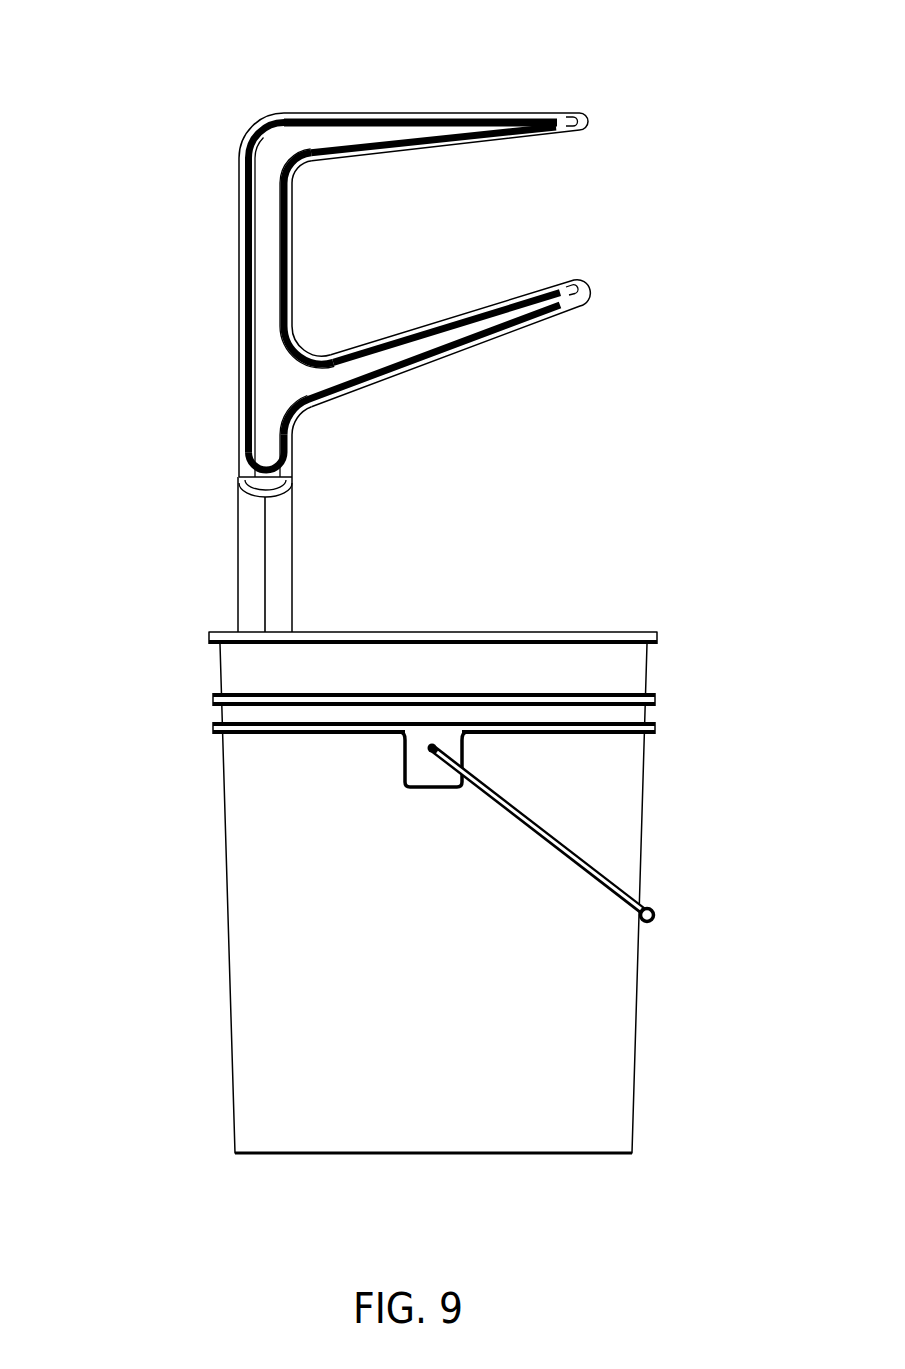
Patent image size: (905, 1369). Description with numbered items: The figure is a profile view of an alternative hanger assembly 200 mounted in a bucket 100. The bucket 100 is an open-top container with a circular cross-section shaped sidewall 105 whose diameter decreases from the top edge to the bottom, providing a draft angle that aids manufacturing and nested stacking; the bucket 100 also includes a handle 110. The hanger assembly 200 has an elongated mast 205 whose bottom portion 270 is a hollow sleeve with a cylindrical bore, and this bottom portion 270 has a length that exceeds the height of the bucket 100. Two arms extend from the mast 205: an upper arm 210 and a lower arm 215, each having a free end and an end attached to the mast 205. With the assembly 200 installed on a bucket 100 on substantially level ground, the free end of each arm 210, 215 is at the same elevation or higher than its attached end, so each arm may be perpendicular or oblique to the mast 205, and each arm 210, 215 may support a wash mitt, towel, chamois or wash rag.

The bucket 100 is at (441, 892).
The sidewall 105 is at (230, 1006).
The handle 110 is at (658, 917).
The hanger assembly 200 is at (359, 322).
The mast 205 is at (238, 250).
The upper arm 210 is at (462, 113).
The lower arm 215 is at (487, 305).
The bottom portion 270 is at (238, 557).